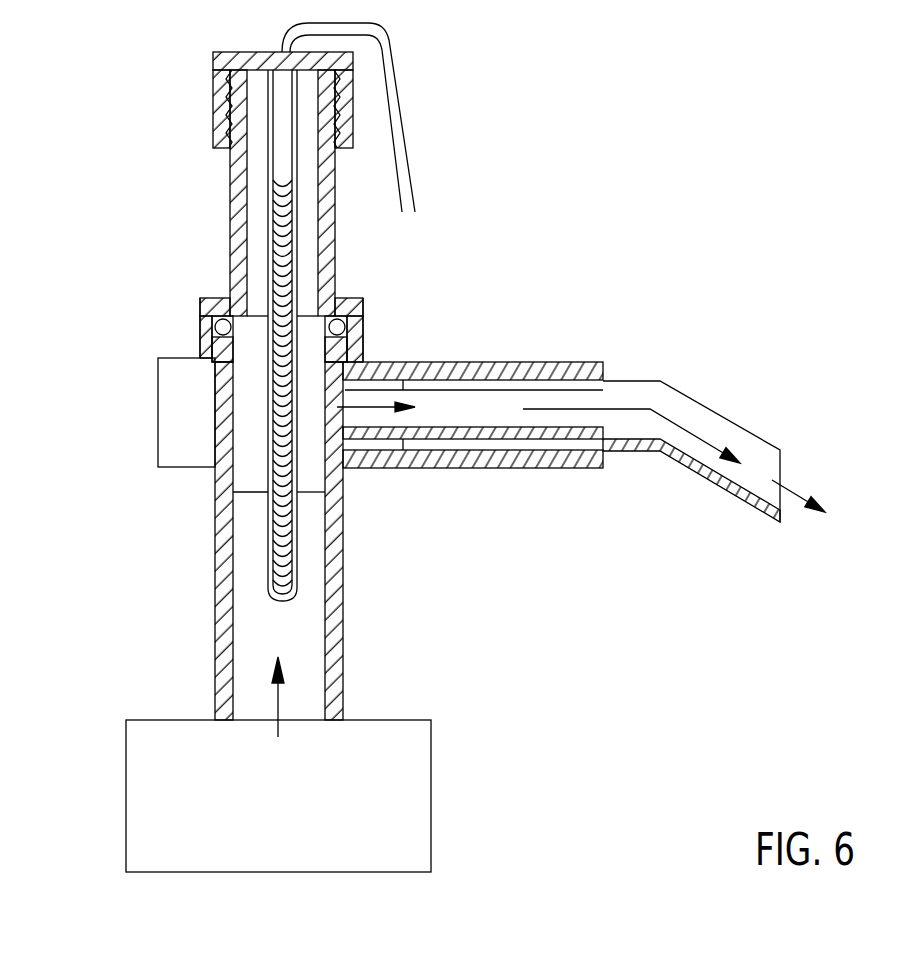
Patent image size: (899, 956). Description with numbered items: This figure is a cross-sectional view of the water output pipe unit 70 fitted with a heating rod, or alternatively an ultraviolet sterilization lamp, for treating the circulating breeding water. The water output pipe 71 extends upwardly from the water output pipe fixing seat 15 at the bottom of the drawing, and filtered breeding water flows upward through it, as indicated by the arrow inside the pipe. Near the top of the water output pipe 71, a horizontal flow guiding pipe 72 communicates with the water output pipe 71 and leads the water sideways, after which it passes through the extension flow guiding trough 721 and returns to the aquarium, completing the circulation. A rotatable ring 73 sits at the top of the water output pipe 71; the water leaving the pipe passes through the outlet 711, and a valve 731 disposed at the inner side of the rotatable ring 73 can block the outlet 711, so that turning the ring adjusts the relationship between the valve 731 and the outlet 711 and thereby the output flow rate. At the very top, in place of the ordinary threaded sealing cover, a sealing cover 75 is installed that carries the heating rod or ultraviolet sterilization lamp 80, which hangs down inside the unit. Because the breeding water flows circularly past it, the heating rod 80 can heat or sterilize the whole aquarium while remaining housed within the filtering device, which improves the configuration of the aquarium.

The water output pipe unit 70 is at (64, 120).
The sealing cover 75 is at (213, 52).
The rotatable ring 73 is at (338, 393).
The heating rod (or ultraviolet sterilization lamp) 80 is at (278, 237).
The water output pipe 71 is at (315, 687).
The valve 731 is at (313, 473).
The horizontal flow guiding pipe 72 is at (523, 365).
The outlet 711 is at (347, 364).
The extension flow guiding trough 721 is at (697, 408).
The water output pipe fixing seat 15 is at (423, 807).